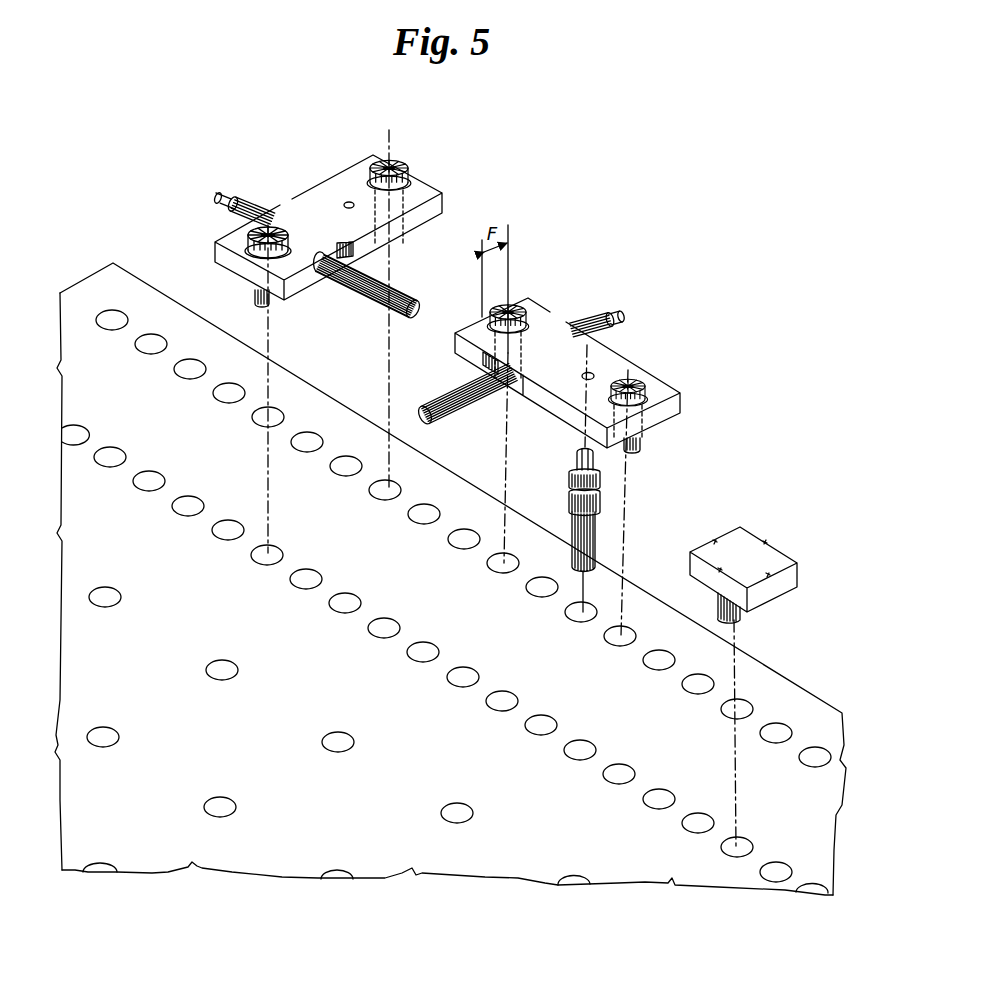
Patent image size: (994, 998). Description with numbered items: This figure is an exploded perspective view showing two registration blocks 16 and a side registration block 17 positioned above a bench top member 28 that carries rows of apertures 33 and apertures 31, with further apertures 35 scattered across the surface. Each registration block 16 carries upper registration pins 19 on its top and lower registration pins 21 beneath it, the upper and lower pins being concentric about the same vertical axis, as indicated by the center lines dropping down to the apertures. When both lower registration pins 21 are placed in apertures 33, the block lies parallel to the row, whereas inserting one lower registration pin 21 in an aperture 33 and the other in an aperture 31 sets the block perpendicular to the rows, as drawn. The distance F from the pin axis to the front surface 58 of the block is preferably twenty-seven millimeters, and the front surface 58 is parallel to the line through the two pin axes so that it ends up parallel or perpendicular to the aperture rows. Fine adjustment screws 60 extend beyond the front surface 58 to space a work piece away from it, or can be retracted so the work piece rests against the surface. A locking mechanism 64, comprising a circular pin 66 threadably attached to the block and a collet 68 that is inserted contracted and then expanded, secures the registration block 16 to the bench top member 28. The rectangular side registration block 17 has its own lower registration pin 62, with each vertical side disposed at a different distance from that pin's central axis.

The registration block 16 is at (428, 178).
The side registration block 17 is at (774, 557).
The upper registration pin 19 is at (248, 243).
The lower registration pin 21 is at (405, 232).
The bench top member 28 is at (779, 686).
The aperture 31 is at (112, 450).
The aperture 33 is at (112, 310).
The hole 35 is at (118, 590).
The front surface 58 is at (303, 284).
The fine adjustment screw 60 is at (224, 206).
The lower registration pin 62 is at (748, 612).
The locking mechanism 64 is at (599, 530).
The circular pin 66 is at (600, 496).
The collet 68 is at (596, 458).